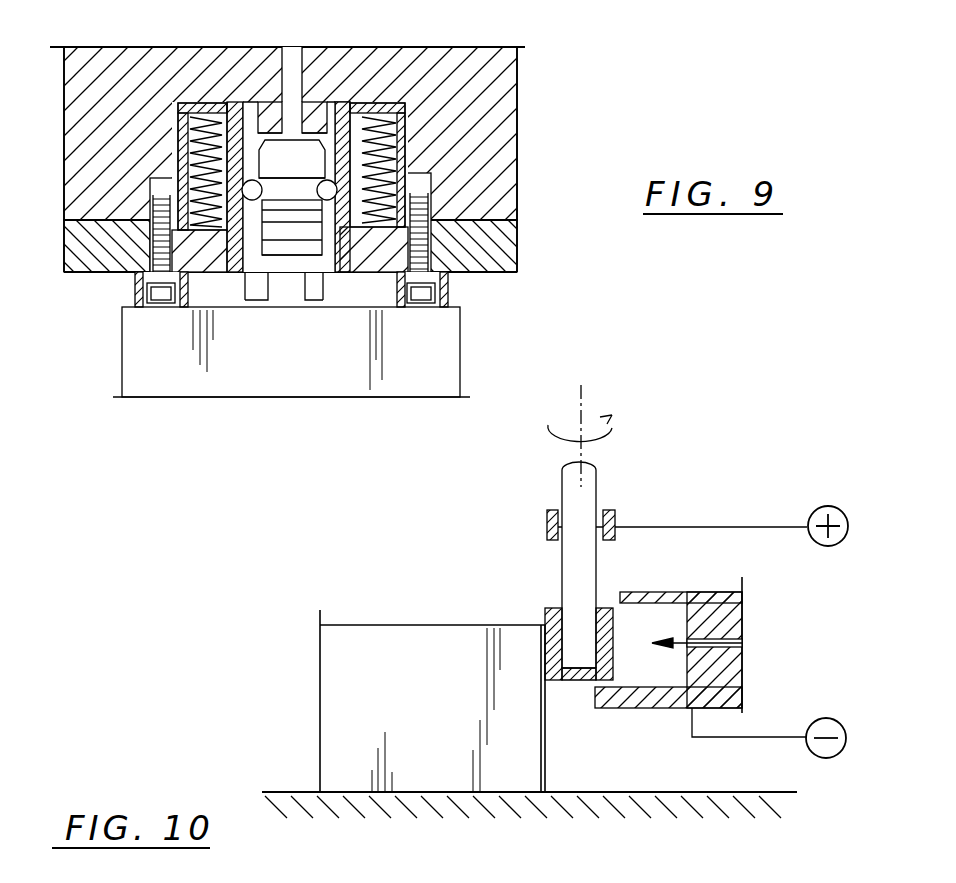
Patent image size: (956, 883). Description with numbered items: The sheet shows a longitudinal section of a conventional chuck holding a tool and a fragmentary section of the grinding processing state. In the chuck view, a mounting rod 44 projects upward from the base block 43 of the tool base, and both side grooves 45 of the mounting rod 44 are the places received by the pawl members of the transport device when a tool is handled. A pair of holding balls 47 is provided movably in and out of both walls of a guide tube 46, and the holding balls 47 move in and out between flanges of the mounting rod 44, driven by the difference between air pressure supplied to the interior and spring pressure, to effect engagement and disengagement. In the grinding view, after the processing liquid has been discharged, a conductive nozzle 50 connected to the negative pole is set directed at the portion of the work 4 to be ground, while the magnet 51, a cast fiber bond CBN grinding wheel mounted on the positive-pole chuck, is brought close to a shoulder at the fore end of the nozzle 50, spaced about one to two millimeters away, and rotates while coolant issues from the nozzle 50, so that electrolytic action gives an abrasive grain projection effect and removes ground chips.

In FIG. 10, the work 4 is at (394, 643).
In FIG. 9, the base block 43 is at (163, 363).
In FIG. 9, the mounting rod 44 is at (270, 268).
In FIG. 9, the side grooves 45 is at (313, 270).
In FIG. 9, the guide tube 46 is at (347, 253).
In FIG. 9, the holding balls 47 is at (188, 160).
In FIG. 10, the conductive nozzle 50 is at (658, 697).
In FIG. 10, the magnet 51 is at (546, 610).